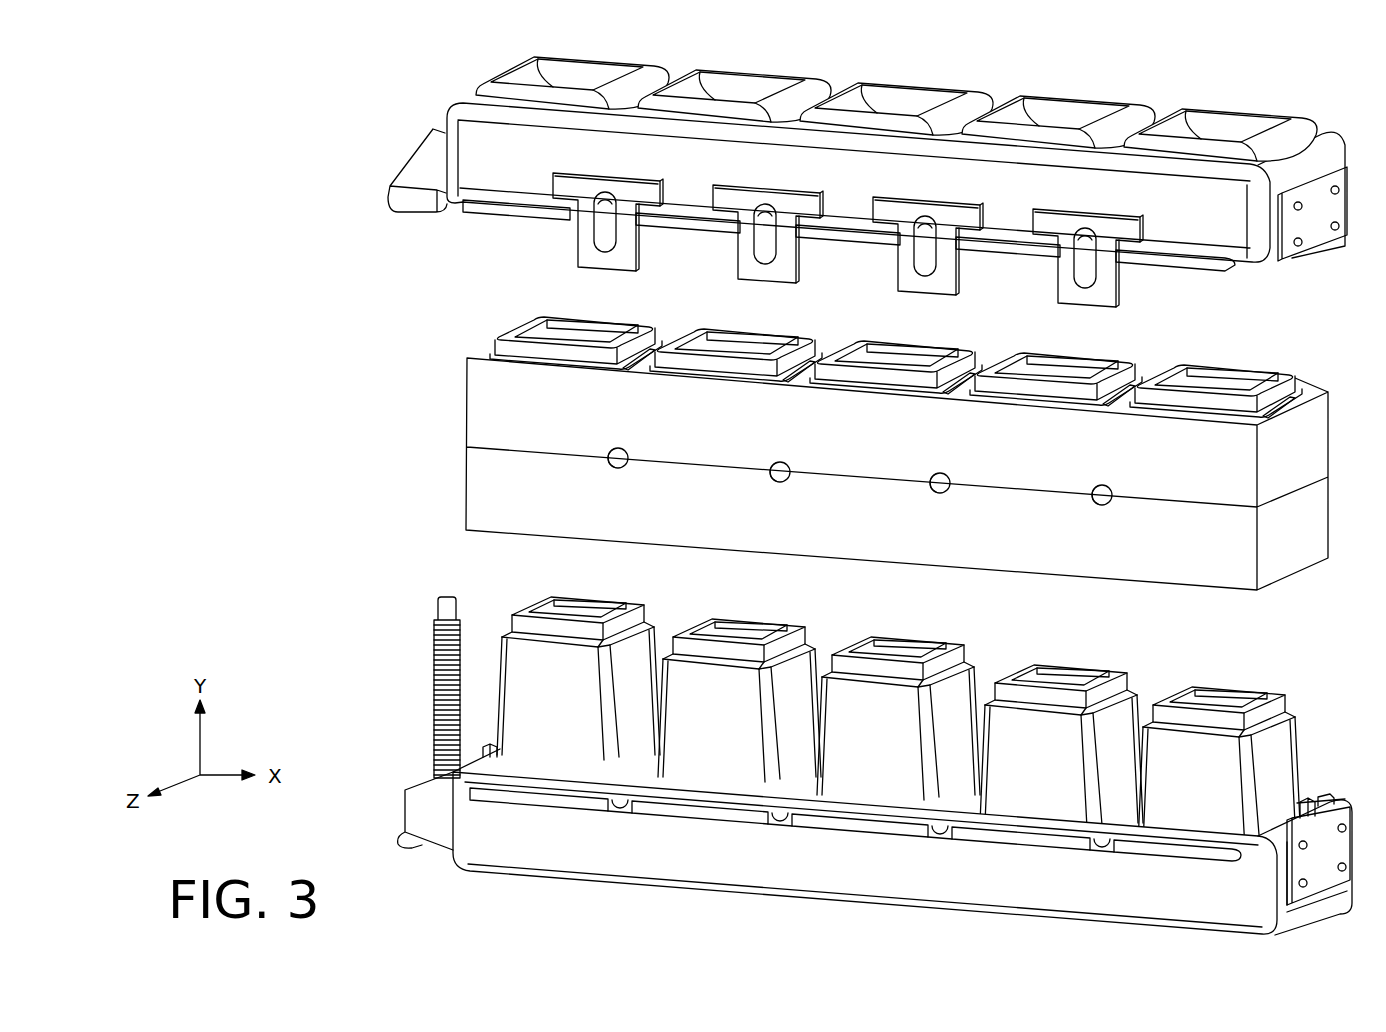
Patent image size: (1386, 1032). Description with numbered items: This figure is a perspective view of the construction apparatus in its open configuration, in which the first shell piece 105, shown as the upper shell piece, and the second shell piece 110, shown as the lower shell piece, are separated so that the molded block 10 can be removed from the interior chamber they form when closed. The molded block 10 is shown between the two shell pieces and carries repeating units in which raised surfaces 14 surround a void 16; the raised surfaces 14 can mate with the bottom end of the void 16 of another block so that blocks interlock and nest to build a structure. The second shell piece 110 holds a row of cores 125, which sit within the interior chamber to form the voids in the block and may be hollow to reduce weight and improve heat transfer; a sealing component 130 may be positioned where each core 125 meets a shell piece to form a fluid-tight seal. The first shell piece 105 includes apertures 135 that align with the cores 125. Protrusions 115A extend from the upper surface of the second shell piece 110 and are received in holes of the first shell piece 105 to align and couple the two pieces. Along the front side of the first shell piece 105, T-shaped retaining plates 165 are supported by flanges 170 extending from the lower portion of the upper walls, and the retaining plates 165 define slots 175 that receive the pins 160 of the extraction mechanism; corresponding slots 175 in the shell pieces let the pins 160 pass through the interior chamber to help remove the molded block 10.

The molded block 10 is at (463, 483).
The raised surfaces 14 is at (545, 352).
The void 16 is at (581, 326).
The first shell piece 105 is at (1330, 142).
The second shell piece 110 is at (842, 870).
The protrusions 115A is at (480, 753).
The cores 125 is at (560, 753).
The sealing component 130 is at (1112, 670).
The apertures 135 is at (583, 75).
The pins 160 is at (932, 488).
The retaining plates 165 is at (575, 243).
The flanges 170 is at (1228, 260).
The slots 175 is at (932, 252).